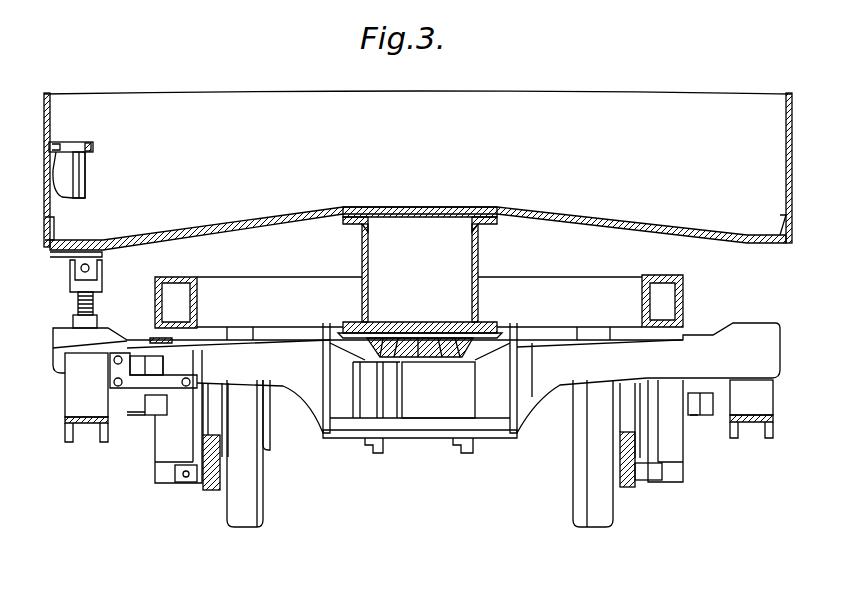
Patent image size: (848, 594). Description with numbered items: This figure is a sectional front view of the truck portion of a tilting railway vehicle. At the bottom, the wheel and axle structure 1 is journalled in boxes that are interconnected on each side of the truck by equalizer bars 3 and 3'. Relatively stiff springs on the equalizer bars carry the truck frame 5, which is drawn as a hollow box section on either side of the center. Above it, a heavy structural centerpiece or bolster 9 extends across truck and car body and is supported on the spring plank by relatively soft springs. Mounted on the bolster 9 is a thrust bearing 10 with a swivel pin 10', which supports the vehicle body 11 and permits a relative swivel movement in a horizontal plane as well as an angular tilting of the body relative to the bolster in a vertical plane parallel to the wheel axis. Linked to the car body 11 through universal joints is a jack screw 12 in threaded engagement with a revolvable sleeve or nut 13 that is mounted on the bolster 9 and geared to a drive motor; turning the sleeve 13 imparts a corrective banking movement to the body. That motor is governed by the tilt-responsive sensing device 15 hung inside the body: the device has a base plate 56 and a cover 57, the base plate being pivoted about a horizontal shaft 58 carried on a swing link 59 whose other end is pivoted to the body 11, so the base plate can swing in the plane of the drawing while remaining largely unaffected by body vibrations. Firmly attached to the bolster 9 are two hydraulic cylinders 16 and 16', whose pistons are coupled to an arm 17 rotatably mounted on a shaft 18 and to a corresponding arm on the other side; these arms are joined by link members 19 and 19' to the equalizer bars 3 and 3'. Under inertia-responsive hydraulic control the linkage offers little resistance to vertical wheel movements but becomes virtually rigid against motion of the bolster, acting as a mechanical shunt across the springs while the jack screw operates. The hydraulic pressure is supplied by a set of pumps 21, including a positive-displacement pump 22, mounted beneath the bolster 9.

The vehicle body 11 is at (56, 128).
The swing link 59 is at (80, 146).
The horizontal shaft 58 is at (95, 148).
The tilt-responsive sensing device 15 is at (80, 182).
The base plate 56 is at (88, 190).
The cover 57 is at (72, 190).
The truck frame 5 is at (567, 282).
The jack screw 12 is at (95, 305).
The revolvable sleeve or nut 13 is at (78, 323).
The arm 17 is at (186, 368).
The shaft 18 is at (108, 392).
The hydraulic cylinder 16 is at (142, 415).
The link member 19 is at (166, 416).
The wheel and axle structure 1 is at (248, 468).
The equalizer bar 3 is at (206, 475).
The set of pumps 21 is at (372, 408).
The pump 22 is at (436, 410).
The thrust bearing 10 is at (420, 370).
The swivel pin 10' is at (420, 364).
The bolster 9 is at (547, 384).
The hydraulic cylinder 16' is at (730, 410).
The link member 19' is at (673, 431).
The equalizer bar 3' is at (638, 471).